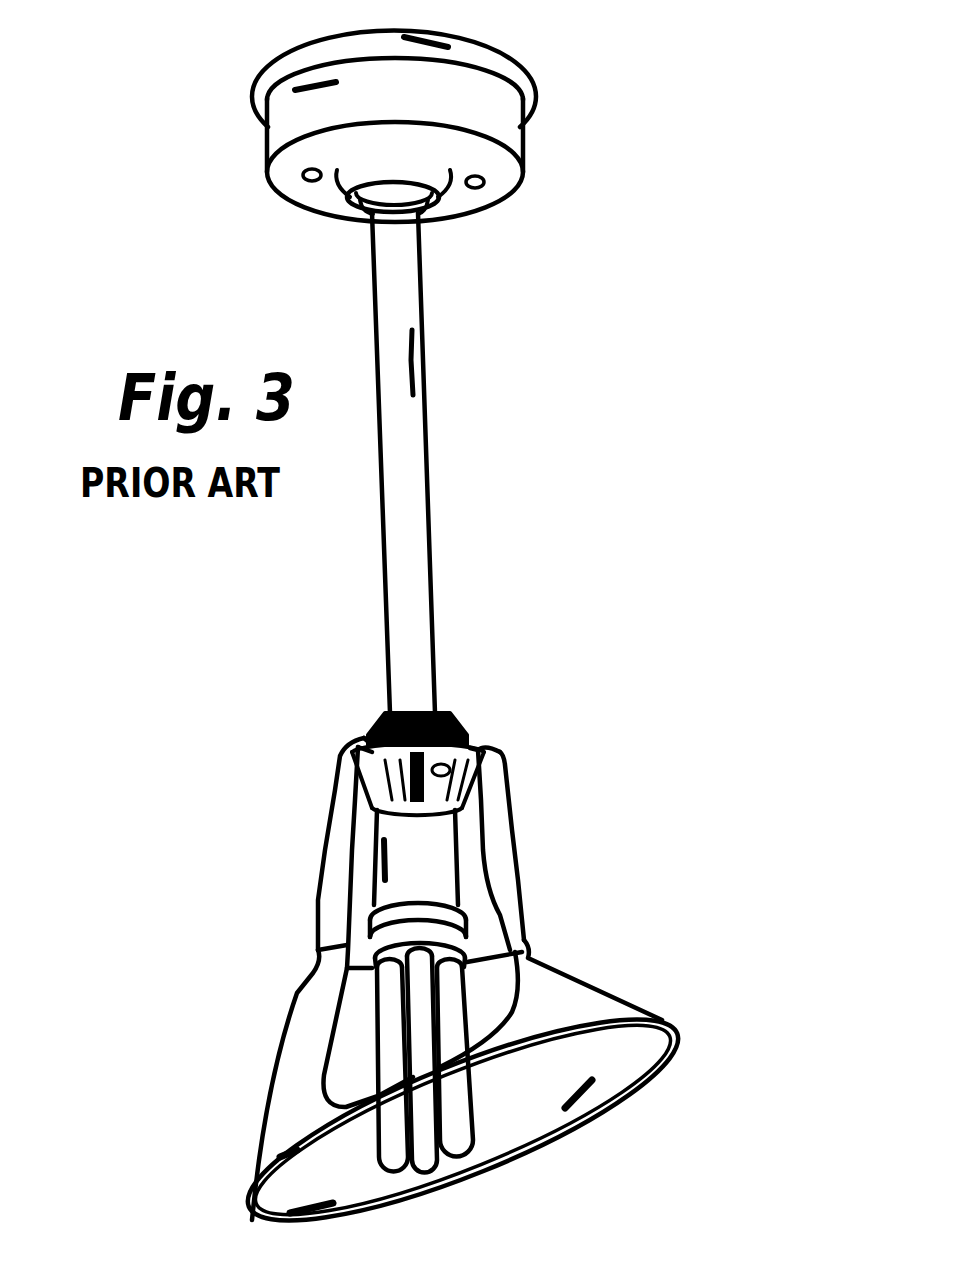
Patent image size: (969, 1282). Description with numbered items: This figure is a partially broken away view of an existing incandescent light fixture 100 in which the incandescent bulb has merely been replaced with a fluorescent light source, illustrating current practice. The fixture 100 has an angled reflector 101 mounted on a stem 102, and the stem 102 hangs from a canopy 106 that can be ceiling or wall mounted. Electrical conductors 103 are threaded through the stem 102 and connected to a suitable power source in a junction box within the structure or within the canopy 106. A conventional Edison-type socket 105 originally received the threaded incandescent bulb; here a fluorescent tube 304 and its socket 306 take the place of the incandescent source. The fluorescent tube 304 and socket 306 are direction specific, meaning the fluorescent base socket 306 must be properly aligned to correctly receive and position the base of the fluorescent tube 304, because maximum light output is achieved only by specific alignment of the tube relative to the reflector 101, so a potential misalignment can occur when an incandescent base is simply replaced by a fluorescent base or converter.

The light fixture 100 is at (305, 726).
The angled reflector 101 is at (303, 1076).
The stem 102 is at (415, 442).
The electrical conductors 103 is at (470, 745).
The Edison-type socket 105 is at (430, 832).
The canopy 106 is at (490, 115).
The fluorescent light source 304 is at (470, 1160).
The fluorescent base socket 306 is at (450, 920).